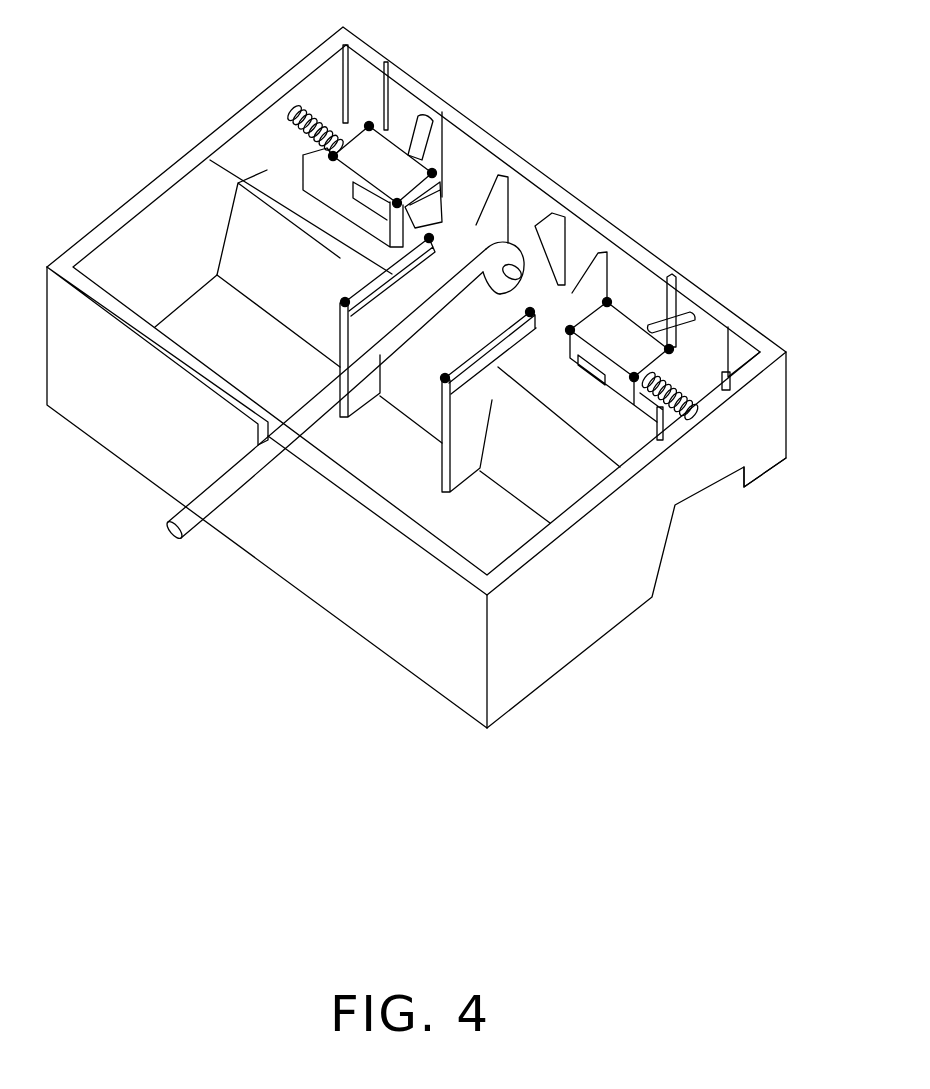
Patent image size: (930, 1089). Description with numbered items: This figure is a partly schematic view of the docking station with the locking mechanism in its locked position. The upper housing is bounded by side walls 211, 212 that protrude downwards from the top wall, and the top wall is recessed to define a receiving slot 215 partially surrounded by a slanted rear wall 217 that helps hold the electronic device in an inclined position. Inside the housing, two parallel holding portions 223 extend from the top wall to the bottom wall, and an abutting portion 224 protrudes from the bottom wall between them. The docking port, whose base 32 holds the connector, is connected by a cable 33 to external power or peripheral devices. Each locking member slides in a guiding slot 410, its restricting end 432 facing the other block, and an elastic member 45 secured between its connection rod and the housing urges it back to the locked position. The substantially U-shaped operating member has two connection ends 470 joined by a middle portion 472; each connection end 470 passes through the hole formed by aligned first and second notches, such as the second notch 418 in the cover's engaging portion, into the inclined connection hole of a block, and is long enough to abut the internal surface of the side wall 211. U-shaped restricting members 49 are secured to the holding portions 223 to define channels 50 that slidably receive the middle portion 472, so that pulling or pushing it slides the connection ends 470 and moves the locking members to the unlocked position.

The side wall 212 is at (383, 618).
The side wall 211 is at (757, 338).
The receiving slot 215 is at (703, 503).
The rear wall 217 is at (250, 248).
The holding portions 223 is at (340, 320).
The abutting portion 224 is at (410, 362).
The channel 50 is at (468, 380).
The cable 33 is at (238, 475).
The restricting members 49 is at (390, 233).
The elastic members 45 is at (293, 117).
The connection ends 470 is at (413, 132).
The restricting end 432 is at (428, 203).
The middle portion 472 is at (482, 238).
The base 32 is at (552, 287).
The second notch 418 is at (600, 362).
The guiding slot 410 is at (675, 382).